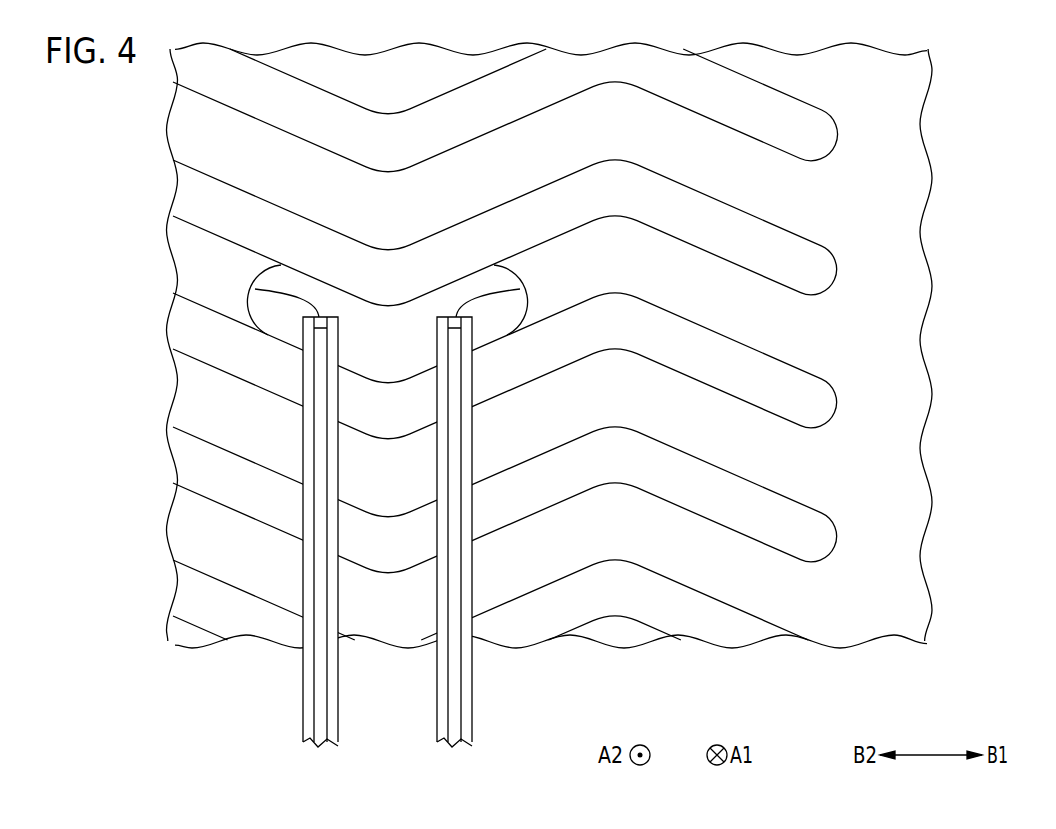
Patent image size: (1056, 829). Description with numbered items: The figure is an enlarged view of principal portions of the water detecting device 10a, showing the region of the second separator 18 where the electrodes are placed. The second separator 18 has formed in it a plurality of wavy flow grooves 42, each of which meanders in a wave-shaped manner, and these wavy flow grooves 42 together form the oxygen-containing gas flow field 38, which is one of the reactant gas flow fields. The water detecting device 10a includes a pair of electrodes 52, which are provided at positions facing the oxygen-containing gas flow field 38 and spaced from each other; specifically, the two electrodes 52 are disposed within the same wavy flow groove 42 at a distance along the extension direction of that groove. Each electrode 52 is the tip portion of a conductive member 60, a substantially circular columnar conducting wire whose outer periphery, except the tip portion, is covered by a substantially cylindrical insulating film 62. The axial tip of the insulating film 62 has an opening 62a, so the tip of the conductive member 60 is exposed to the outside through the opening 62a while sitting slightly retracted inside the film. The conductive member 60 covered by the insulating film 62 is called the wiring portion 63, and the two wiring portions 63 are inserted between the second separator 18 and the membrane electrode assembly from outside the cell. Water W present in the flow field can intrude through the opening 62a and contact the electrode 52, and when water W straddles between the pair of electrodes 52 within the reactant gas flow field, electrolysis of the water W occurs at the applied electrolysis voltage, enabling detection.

The water detecting device 10a is at (295, 762).
The second separator 18 is at (910, 403).
The oxygen-containing gas flow field 38 is at (729, 284).
The wavy flow groove 42 is at (758, 317).
The electrode 52 is at (320, 322).
The conductive member 60 is at (322, 712).
The insulating film 62 is at (310, 680).
The opening 62a is at (255, 289).
The wiring portion 63 is at (247, 667).
The water W is at (385, 317).